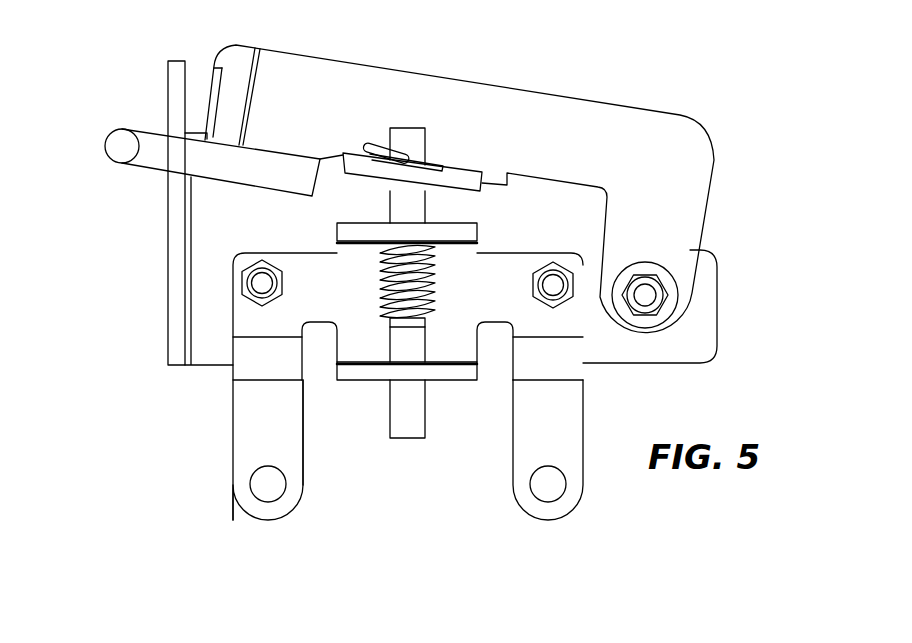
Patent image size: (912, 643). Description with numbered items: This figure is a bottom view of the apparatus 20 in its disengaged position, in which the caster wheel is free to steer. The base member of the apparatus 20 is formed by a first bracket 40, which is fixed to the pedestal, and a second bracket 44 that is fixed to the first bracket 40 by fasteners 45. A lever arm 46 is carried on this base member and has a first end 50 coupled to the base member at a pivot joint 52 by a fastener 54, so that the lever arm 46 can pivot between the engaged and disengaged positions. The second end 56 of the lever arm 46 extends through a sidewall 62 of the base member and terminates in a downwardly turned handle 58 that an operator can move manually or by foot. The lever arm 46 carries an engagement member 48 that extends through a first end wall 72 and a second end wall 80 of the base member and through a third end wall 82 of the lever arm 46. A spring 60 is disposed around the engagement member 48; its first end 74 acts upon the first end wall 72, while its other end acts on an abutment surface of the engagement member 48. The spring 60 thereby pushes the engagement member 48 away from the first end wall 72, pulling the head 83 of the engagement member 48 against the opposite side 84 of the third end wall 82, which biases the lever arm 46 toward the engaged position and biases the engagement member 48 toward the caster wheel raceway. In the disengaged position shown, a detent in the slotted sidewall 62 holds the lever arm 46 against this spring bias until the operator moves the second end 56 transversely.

The apparatus 20 is at (750, 109).
The first bracket 40 is at (567, 418).
The second bracket 44 is at (703, 322).
The fasteners 45 is at (248, 278).
The lever arm 46 is at (325, 75).
The engagement member 48 is at (422, 425).
The first end 50 is at (663, 138).
The pivot joint 52 is at (730, 366).
The fastener 54 is at (663, 278).
The second end 56 is at (162, 160).
The downwardly turned handle 58 is at (112, 142).
The spring 60 is at (428, 300).
The sidewall 62 is at (167, 112).
The first end wall 72 is at (357, 232).
The first end 74 is at (447, 238).
The second end wall 80 is at (368, 364).
The third end wall 82 is at (470, 173).
The head 83 is at (390, 137).
The opposite side 84 is at (451, 155).